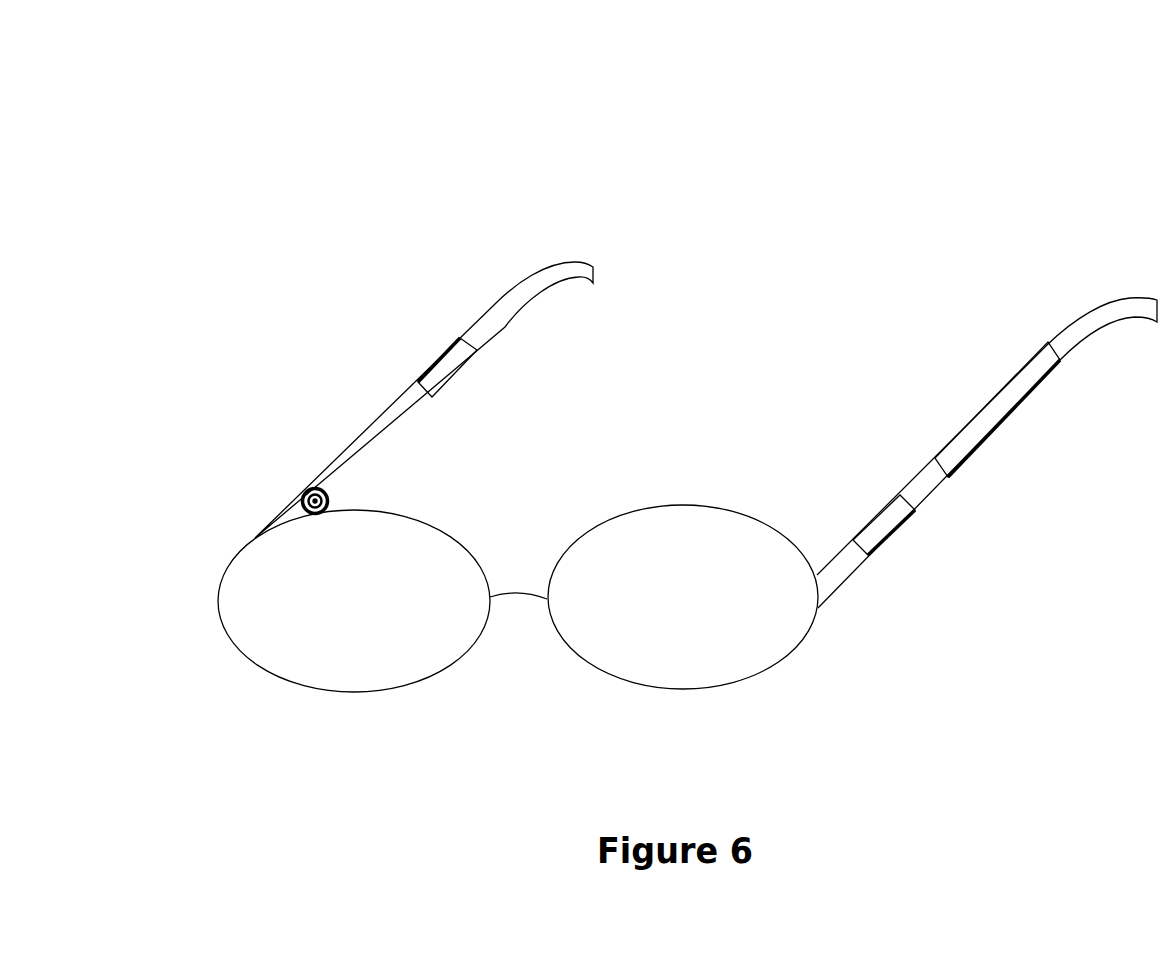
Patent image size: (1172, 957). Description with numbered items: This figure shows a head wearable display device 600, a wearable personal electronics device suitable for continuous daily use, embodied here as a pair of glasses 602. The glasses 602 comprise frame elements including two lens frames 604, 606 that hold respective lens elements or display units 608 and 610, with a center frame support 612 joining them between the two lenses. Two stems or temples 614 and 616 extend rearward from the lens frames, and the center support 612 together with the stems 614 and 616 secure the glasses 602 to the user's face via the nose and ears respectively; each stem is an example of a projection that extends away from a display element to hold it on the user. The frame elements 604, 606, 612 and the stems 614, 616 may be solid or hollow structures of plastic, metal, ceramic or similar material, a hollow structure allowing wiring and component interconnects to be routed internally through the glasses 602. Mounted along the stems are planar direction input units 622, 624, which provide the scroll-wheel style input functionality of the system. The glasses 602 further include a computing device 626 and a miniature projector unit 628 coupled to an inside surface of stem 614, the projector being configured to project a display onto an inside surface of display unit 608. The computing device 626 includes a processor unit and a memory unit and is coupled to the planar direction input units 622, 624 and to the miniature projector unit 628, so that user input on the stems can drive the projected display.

The head wearable display device 600 is at (338, 118).
The glasses 602 is at (740, 380).
The lens frame 604 is at (765, 672).
The lens frame 606 is at (453, 663).
The display unit 608 is at (670, 655).
The display unit 610 is at (367, 670).
The center frame support 612 is at (520, 593).
The stem 614 is at (507, 328).
The stem 616 is at (1052, 340).
The planar direction input unit 622 is at (877, 535).
The planar direction input unit 624 is at (455, 362).
The computing device 626 is at (970, 432).
The miniature projector unit 628 is at (315, 488).